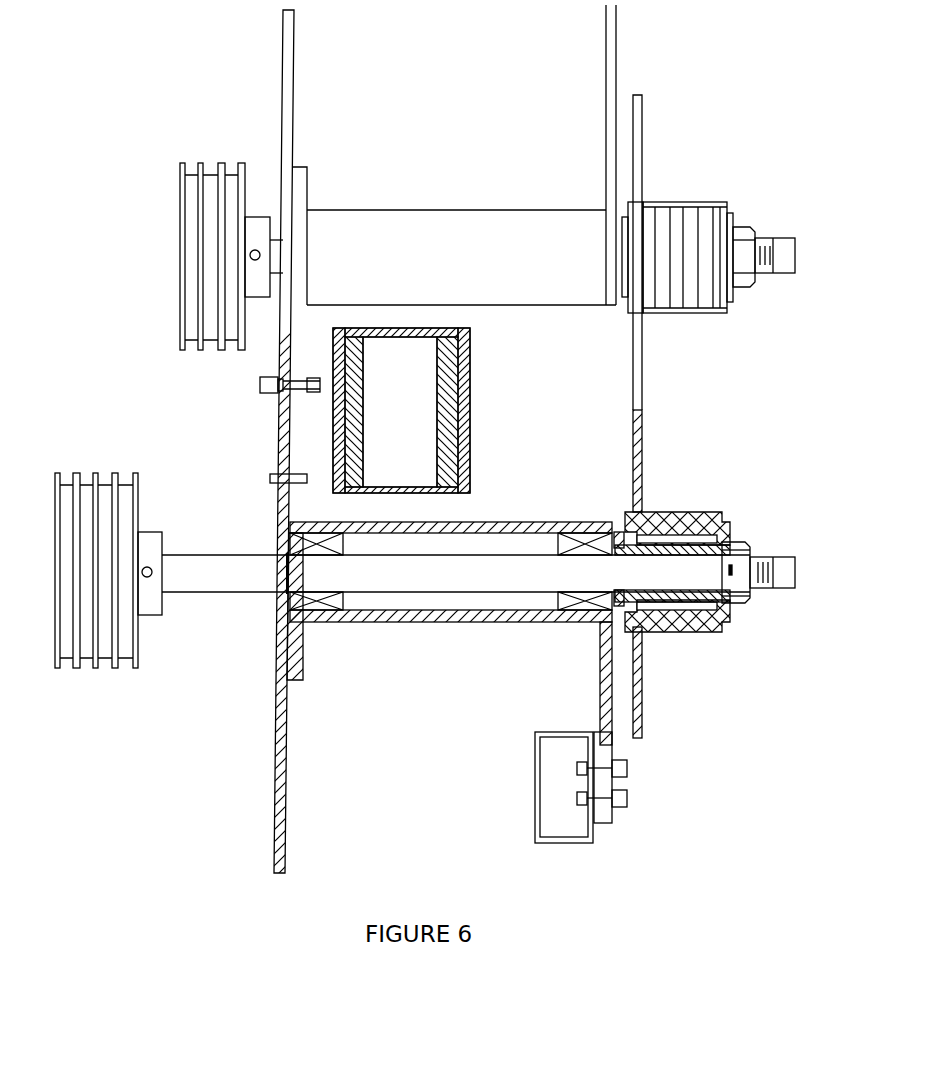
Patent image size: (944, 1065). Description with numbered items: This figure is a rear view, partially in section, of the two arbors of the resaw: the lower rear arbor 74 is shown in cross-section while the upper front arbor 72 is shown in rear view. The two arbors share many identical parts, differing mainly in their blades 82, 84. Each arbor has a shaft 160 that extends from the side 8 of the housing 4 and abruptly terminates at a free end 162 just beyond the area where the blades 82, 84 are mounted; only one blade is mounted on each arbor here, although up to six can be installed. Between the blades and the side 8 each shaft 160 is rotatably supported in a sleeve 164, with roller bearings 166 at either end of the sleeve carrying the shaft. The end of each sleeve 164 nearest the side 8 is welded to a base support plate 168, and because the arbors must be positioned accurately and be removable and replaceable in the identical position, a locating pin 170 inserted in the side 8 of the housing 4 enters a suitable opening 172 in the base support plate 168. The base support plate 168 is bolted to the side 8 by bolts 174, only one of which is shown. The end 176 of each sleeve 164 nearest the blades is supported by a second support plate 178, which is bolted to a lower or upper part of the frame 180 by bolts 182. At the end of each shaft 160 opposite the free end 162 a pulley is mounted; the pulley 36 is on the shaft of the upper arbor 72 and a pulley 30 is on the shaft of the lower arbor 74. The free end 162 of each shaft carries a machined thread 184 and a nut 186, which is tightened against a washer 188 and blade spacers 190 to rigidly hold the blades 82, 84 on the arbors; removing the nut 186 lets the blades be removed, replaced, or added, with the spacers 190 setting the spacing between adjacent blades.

The housing 4 is at (282, 441).
The side of housing 8 is at (281, 75).
The drive pulley 30 is at (112, 670).
The pulley 36 is at (200, 352).
The upper front arbor 72 is at (407, 218).
The lower rear arbor 74 is at (398, 616).
The blade 82 is at (636, 368).
The blade 84 is at (666, 426).
The shaft 160 is at (275, 238).
The free end 162 is at (793, 238).
The sleeve 164 is at (451, 600).
The roller bearings 166 is at (297, 602).
The base support plate 168 is at (302, 182).
The locating pin 170 is at (268, 478).
The opening 172 is at (266, 494).
The bolts 174 is at (258, 381).
The end of sleeve 176 is at (605, 207).
The second support plate 178 is at (610, 62).
The frame 180 is at (535, 807).
The bolts 182 is at (627, 798).
The machined thread 184 is at (780, 417).
The nut 186 is at (743, 223).
The washer 188 is at (732, 303).
The blade spacers 190 is at (687, 200).